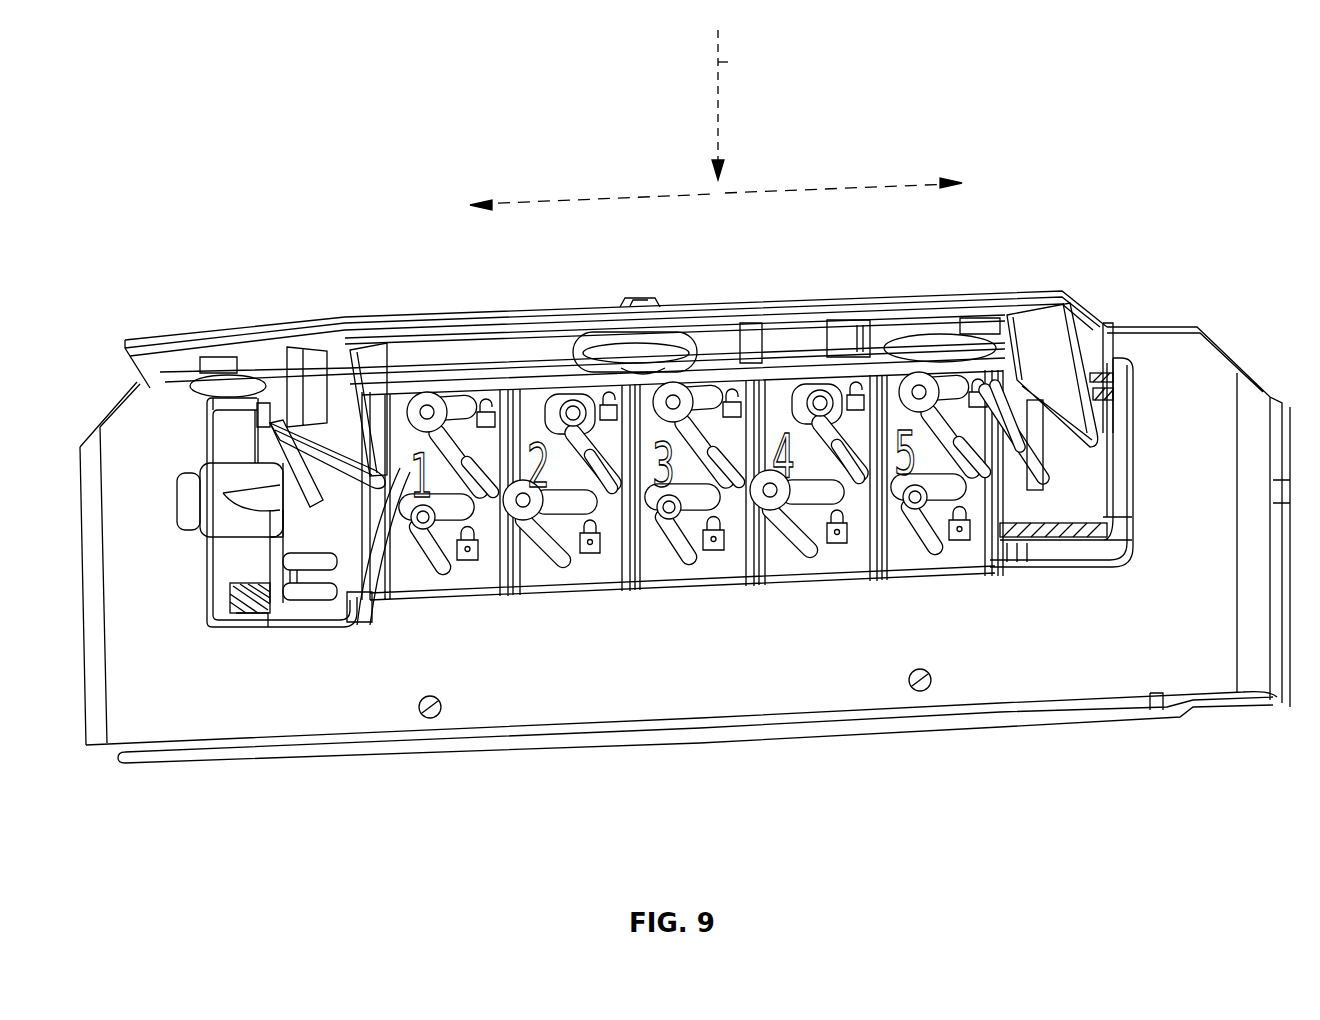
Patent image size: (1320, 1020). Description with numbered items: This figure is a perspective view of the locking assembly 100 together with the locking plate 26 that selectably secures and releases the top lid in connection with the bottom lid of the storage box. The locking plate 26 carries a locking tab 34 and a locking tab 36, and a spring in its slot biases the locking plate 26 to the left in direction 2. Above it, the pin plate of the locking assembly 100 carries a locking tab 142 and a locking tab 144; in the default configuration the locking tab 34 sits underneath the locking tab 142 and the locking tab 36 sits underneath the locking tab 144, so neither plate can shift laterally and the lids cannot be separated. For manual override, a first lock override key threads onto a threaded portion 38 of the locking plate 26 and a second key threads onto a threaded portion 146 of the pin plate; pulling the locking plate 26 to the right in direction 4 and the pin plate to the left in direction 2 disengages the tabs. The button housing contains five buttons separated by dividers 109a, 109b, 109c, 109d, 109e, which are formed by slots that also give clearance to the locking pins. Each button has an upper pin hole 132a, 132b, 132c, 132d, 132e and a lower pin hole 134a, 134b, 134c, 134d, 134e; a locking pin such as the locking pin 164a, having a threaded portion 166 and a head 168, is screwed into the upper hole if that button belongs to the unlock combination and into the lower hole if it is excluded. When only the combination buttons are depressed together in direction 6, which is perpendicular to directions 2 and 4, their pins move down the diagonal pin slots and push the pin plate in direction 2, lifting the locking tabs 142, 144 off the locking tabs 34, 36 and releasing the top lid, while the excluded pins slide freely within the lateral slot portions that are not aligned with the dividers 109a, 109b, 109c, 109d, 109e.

The locking assembly 100 is at (1104, 184).
The direction 2 is at (600, 200).
The direction 4 is at (850, 190).
The direction 6 is at (724, 65).
The locking plate 26 is at (500, 318).
The locking tab 34 is at (323, 390).
The locking tab 36 is at (1042, 340).
The threaded portion 38 is at (1124, 364).
The divider 109a is at (534, 655).
The divider 109b is at (656, 649).
The divider 109c is at (778, 643).
The divider 109d is at (901, 637).
The divider 109e is at (1037, 628).
The upper pin hole 132a is at (440, 373).
The upper pin hole 132b is at (572, 364).
The upper pin hole 132c is at (689, 362).
The upper pin hole 132d is at (816, 356).
The upper pin hole 132e is at (924, 354).
The lower pin hole 134a is at (465, 661).
The lower pin hole 134b is at (578, 638).
The lower pin hole 134c is at (717, 641).
The lower pin hole 134d is at (825, 626).
The lower pin hole 134e is at (954, 635).
The locking tab 142 is at (262, 398).
The locking tab 144 is at (978, 322).
The threaded portion 146 is at (238, 614).
The locking pin 164a is at (387, 390).
The threaded portion 166 is at (357, 625).
The head 168 is at (415, 385).